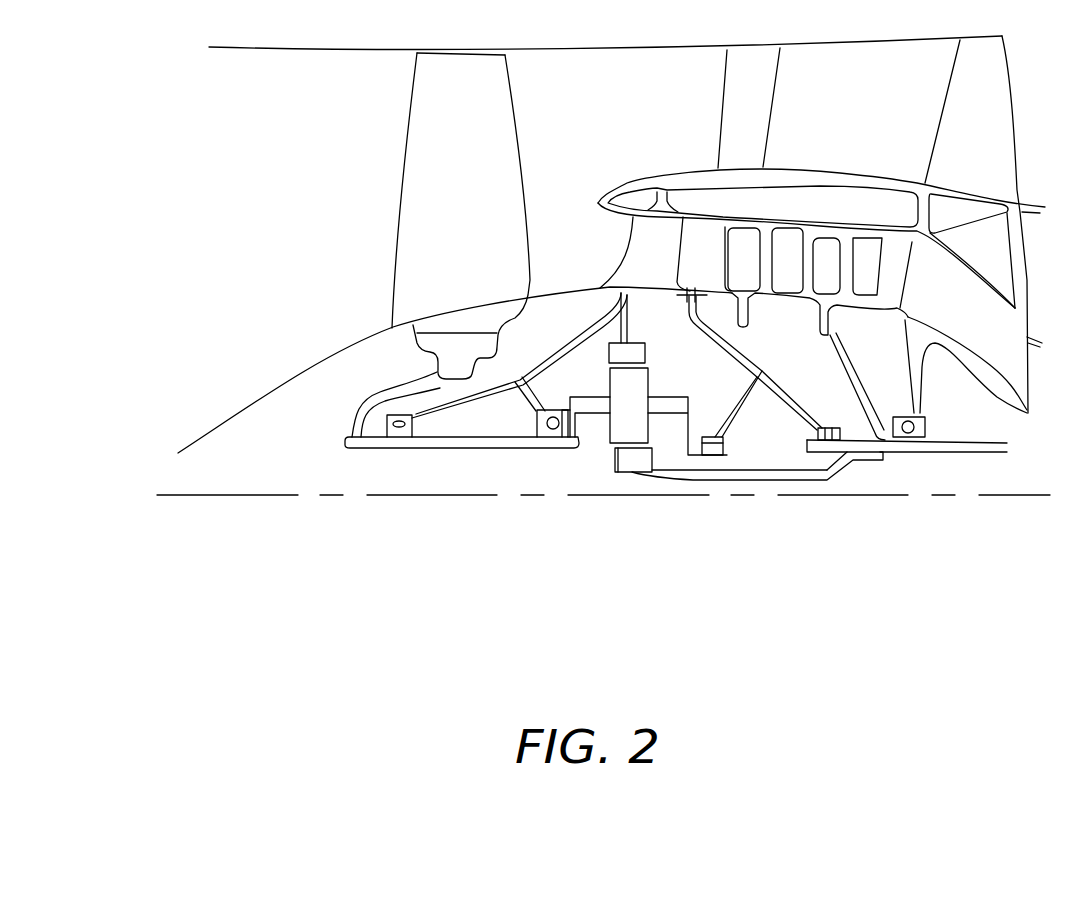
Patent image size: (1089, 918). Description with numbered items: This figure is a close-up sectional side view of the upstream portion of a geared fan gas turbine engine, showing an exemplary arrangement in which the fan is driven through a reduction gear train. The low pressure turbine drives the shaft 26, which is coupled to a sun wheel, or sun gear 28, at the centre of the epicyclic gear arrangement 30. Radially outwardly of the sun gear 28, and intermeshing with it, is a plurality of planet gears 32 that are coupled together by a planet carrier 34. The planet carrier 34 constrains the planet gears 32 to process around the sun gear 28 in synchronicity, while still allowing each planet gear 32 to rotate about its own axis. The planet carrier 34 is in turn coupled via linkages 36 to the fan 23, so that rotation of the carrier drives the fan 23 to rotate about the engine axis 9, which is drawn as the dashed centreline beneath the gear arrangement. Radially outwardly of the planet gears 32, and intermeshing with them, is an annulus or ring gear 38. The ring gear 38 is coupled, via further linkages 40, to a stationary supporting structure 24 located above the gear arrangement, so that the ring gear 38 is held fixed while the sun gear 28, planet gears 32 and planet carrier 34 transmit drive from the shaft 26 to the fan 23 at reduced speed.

The engine axis 9 is at (273, 500).
The fan 23 is at (433, 190).
The stationary supporting structure 24 is at (635, 247).
The shaft 26 is at (765, 475).
The sun gear 28 is at (633, 460).
The epicyclic gear arrangement 30 is at (595, 441).
The planet gears 32 is at (620, 430).
The planet carrier 34 is at (684, 436).
The linkages 36 is at (583, 436).
The ring gear 38 is at (640, 353).
The linkages 40 is at (630, 322).